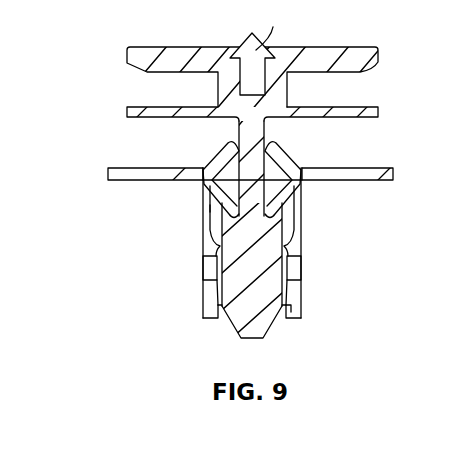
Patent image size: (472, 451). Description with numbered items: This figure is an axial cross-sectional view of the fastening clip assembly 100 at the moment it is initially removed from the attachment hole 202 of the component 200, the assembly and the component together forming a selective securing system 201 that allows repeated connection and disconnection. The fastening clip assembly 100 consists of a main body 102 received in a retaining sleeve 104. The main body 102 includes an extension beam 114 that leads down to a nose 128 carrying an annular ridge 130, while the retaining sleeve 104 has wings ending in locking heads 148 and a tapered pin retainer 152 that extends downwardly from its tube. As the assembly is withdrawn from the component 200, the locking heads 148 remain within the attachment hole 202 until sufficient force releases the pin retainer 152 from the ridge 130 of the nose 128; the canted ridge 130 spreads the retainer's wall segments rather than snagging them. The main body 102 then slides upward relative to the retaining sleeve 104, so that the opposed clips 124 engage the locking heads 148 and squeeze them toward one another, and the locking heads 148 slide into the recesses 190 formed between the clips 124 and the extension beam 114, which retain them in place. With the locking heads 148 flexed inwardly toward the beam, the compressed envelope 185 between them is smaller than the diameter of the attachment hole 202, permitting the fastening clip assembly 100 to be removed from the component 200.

The fastening clip assembly 100 is at (147, 33).
The main body 102 is at (382, 34).
The retaining sleeve 104 is at (306, 293).
The extension beam 114 is at (267, 132).
The clips 124 is at (210, 220).
The nose 128 is at (270, 334).
The annular ridge 130 is at (207, 312).
The locking heads 148 is at (214, 147).
The pin retainer 152 is at (207, 308).
The compressed envelope 185 is at (210, 210).
The recesses 190 is at (203, 262).
The component 200 is at (379, 168).
The selective securing system 201 is at (89, 96).
The attachment hole 202 is at (203, 164).